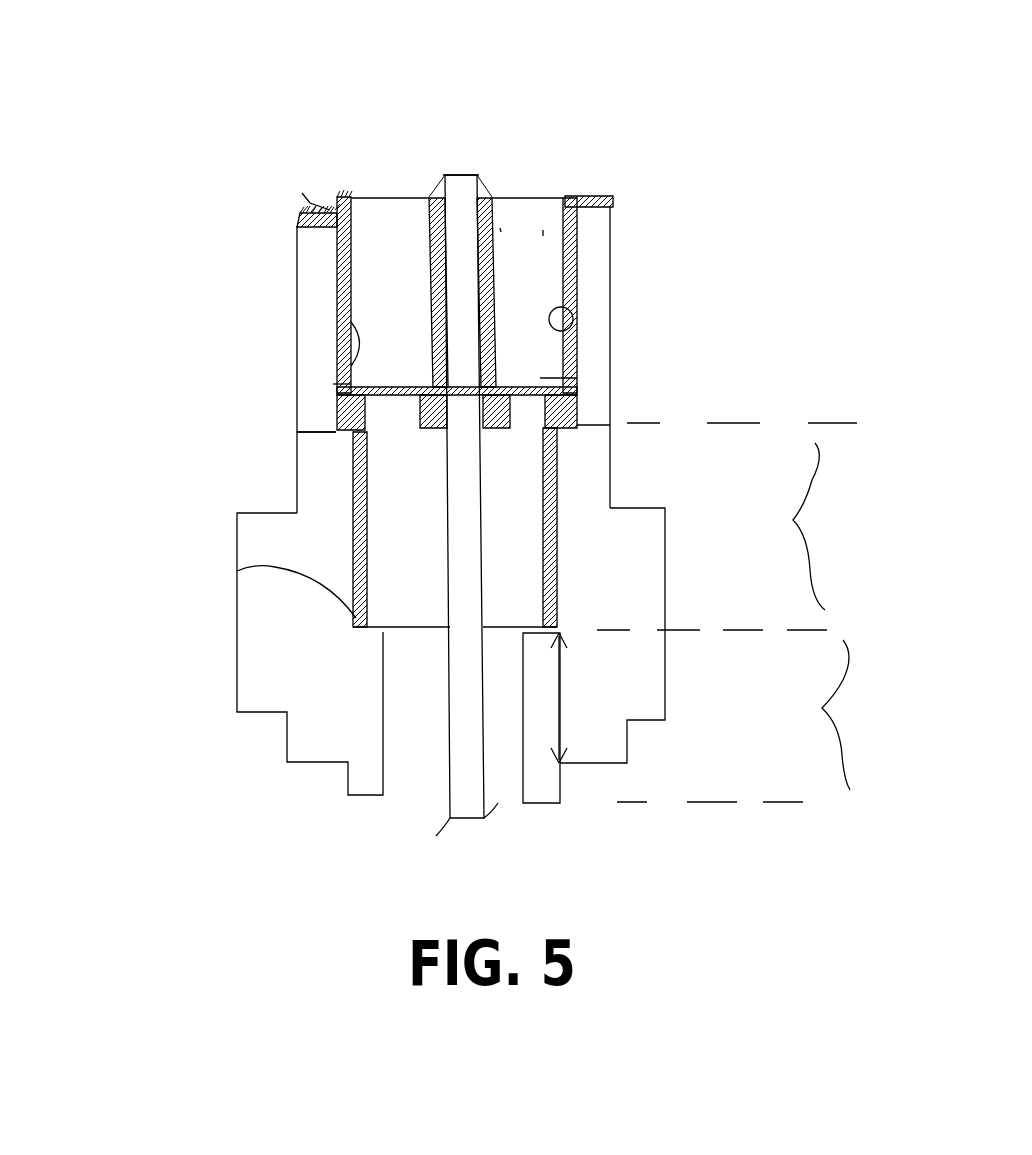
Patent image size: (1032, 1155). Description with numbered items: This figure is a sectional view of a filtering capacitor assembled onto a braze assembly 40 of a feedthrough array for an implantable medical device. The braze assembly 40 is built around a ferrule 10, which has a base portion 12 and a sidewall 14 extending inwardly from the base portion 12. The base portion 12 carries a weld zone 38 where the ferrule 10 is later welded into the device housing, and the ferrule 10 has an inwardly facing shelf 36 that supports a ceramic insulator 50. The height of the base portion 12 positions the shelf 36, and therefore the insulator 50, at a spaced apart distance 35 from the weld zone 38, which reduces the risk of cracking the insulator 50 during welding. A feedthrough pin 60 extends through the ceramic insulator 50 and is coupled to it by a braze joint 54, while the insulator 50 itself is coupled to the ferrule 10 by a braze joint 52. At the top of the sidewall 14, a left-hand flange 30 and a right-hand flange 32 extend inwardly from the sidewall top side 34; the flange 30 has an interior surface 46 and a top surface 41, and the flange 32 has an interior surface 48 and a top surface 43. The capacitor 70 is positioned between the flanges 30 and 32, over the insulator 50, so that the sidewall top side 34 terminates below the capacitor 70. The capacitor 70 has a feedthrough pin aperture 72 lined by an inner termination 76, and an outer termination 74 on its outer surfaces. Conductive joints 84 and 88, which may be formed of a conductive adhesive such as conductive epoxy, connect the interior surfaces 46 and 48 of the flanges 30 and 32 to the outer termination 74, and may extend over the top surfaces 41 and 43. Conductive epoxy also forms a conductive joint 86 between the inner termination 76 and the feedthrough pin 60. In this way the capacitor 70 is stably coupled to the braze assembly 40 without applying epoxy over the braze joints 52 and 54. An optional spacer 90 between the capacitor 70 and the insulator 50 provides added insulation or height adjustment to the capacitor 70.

The ferrule 10 is at (667, 573).
The base portion 12 is at (860, 715).
The sidewall 14 is at (845, 526).
The left-hand flange 30 is at (307, 288).
The right-hand flange 32 is at (595, 270).
The top side 34 is at (312, 432).
The spaced apart distance 35 is at (560, 703).
The shelf 36 is at (237, 571).
The weld zone 38 is at (625, 767).
The braze assembly 40 is at (118, 508).
The top surface 41 is at (302, 193).
The top surface 43 is at (597, 203).
The interior surface 46 is at (333, 387).
The interior surface 48 is at (573, 293).
The ceramic insulator 50 is at (387, 508).
The braze joint 52 is at (545, 500).
The braze joint 54 is at (573, 378).
The feedthrough pin 60 is at (462, 176).
The capacitor 70 is at (543, 230).
The feedthrough pin aperture 72 is at (500, 228).
The outer termination 74 is at (333, 217).
The inner termination 76 is at (443, 175).
The conductive joint 84 is at (337, 250).
The conductive joint 86 is at (494, 235).
The conductive joint 88 is at (575, 255).
The spacer 90 is at (540, 378).